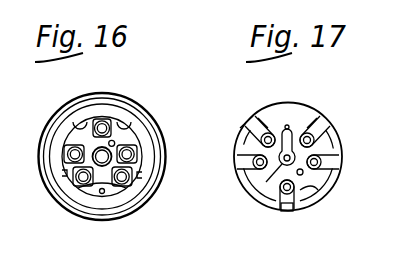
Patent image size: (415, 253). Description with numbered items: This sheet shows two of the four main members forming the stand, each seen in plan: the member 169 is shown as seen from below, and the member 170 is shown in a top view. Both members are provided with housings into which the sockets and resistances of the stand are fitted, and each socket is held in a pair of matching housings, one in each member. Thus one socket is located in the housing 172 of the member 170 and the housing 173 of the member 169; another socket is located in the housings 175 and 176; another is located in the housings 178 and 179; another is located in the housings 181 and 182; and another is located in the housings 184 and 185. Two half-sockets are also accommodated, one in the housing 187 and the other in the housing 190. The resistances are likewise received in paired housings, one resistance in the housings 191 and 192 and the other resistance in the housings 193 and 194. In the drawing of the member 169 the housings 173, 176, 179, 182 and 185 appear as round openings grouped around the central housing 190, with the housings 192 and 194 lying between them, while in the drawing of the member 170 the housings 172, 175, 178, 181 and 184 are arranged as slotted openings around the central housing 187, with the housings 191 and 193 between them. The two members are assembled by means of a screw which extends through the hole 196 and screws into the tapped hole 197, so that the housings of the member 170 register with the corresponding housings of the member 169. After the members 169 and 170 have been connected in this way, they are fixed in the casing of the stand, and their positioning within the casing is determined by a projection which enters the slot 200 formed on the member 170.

In FIG. 16, the member 169 is at (103, 203).
In FIG. 16, the housing 179 is at (67, 205).
In FIG. 16, the housing 176 is at (142, 205).
In FIG. 16, the housing 192 is at (118, 127).
In FIG. 16, the housing 190 is at (133, 157).
In FIG. 16, the housing 185 is at (113, 122).
In FIG. 16, the housing 182 is at (67, 154).
In FIG. 16, the tapped hole 197 is at (130, 146).
In FIG. 16, the housing 173 is at (67, 172).
In FIG. 16, the housing 194 is at (73, 122).
In FIG. 17, the member 170 is at (300, 113).
In FIG. 17, the housing 178 is at (269, 113).
In FIG. 17, the housing 175 is at (329, 128).
In FIG. 17, the housing 172 is at (248, 129).
In FIG. 17, the housing 181 is at (242, 167).
In FIG. 17, the housing 187 is at (322, 160).
In FIG. 17, the hole 196 is at (304, 172).
In FIG. 17, the housing 184 is at (276, 200).
In FIG. 17, the slot 200 is at (291, 211).
In FIG. 17, the housing 193 is at (256, 188).
In FIG. 17, the housing 191 is at (314, 188).